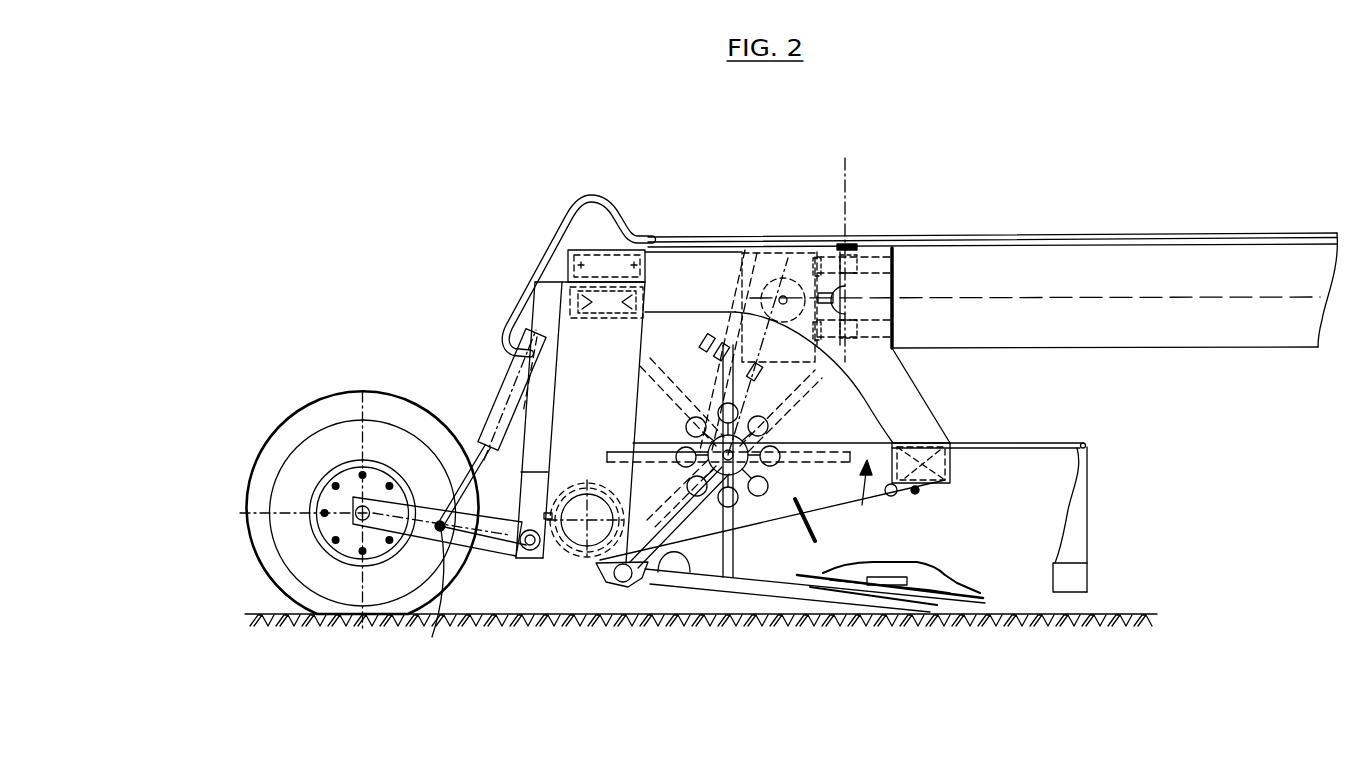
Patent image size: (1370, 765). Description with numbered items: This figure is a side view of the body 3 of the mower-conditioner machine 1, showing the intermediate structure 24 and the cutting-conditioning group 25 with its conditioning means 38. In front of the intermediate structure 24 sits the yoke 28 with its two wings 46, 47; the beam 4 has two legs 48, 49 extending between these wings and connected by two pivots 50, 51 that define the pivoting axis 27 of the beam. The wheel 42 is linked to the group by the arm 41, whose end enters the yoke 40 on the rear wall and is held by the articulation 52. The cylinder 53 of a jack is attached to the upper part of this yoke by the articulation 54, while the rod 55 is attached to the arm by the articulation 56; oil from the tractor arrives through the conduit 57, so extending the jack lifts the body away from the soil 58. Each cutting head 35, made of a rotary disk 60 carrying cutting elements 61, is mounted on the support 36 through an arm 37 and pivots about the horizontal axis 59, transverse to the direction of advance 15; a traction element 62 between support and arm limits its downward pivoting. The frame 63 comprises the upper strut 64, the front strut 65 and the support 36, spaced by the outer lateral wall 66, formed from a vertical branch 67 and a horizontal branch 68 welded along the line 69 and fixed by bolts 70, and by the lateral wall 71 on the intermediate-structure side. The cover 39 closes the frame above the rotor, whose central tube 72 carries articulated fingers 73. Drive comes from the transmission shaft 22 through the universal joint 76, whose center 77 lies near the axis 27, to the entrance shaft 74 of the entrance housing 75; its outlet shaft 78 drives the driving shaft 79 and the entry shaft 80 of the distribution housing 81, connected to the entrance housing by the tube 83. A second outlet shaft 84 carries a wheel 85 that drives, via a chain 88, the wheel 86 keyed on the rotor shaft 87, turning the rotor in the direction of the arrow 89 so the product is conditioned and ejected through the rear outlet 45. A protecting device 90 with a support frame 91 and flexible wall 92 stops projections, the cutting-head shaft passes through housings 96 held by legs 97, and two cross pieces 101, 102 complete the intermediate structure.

The machine 1 is at (1093, 184).
The body 3 is at (358, 220).
The beam 4 is at (1237, 343).
The direction of advance 15 is at (537, 80).
The transmission shaft 22 is at (1100, 299).
The intermediate structure 24 is at (658, 268).
The cutting-conditioning group 25 is at (983, 530).
The pivoting axis 27 is at (844, 167).
The yoke 28 is at (878, 246).
The cutting head 35 is at (942, 573).
The support 36 is at (563, 549).
The arm 37 is at (768, 592).
The conditioning means 38 is at (778, 552).
The cover 39 is at (872, 419).
The yoke 40 is at (520, 495).
The arm 41 is at (494, 542).
The wheel 42 is at (249, 513).
The rear outlet 45 is at (437, 353).
The wing 46 is at (890, 265).
The wing 47 is at (892, 350).
The leg 48 is at (880, 267).
The leg 49 is at (878, 333).
The pivot 50 is at (853, 250).
The pivot 51 is at (858, 347).
The articulation 52 is at (530, 551).
The cylinder 53 is at (527, 372).
The articulation 54 is at (548, 350).
The rod 55 is at (476, 441).
The articulation 56 is at (425, 593).
The conduit 57 is at (562, 230).
The soil 58 is at (645, 725).
The axis 59 is at (614, 570).
The rotary disk 60 is at (927, 566).
The cutting element 61 is at (815, 586).
The traction element 62 is at (688, 574).
The frame 63 is at (560, 325).
The upper strut 64 is at (613, 286).
The front strut 65 is at (925, 442).
The lateral wall 66 is at (587, 352).
The vertical branch 67 is at (563, 430).
The horizontal branch 68 is at (889, 497).
The line 69 is at (633, 455).
The bolts 70 is at (967, 465).
The lateral wall 71 is at (697, 301).
The central tube 72 is at (737, 497).
The fingers 73 is at (733, 556).
The entrance shaft 74 is at (828, 292).
The entrance housing 75 is at (746, 262).
The universal joint 76 is at (852, 296).
The center 77 is at (860, 302).
The outlet shaft 78 is at (716, 358).
The driving shaft 79 is at (662, 514).
The entry shaft 80 is at (622, 503).
The distribution housing 81 is at (662, 540).
The tube 83 is at (660, 402).
The outlet shaft 84 is at (777, 298).
The wheel 85 is at (776, 270).
The wheel 86 is at (758, 470).
The shaft 87 is at (752, 451).
The chain 88 is at (797, 383).
The arrow 89 is at (860, 492).
The protecting device 90 is at (1103, 503).
The support frame 91 is at (1061, 440).
The wall 92 is at (1089, 547).
The housing 96 is at (628, 598).
The legs 97 is at (602, 567).
The cross piece 101 is at (570, 270).
The cross piece 102 is at (917, 492).